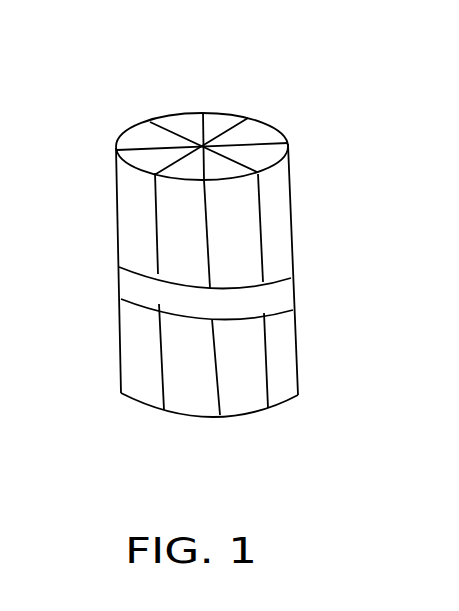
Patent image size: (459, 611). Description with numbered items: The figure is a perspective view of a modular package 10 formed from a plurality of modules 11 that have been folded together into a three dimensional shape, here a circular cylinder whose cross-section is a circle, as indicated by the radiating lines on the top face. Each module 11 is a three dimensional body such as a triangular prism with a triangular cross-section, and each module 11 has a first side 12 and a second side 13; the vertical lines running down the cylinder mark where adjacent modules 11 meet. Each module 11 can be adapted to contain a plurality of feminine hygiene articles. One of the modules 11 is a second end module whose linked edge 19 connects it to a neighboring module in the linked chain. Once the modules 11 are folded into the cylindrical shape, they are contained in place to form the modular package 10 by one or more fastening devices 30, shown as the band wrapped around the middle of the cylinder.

The modular package 10 is at (140, 80).
The fastening device 30 is at (268, 300).
The first side 12 is at (162, 378).
The module 11 is at (195, 394).
The linked edge 19 is at (206, 405).
The second side 13 is at (219, 375).